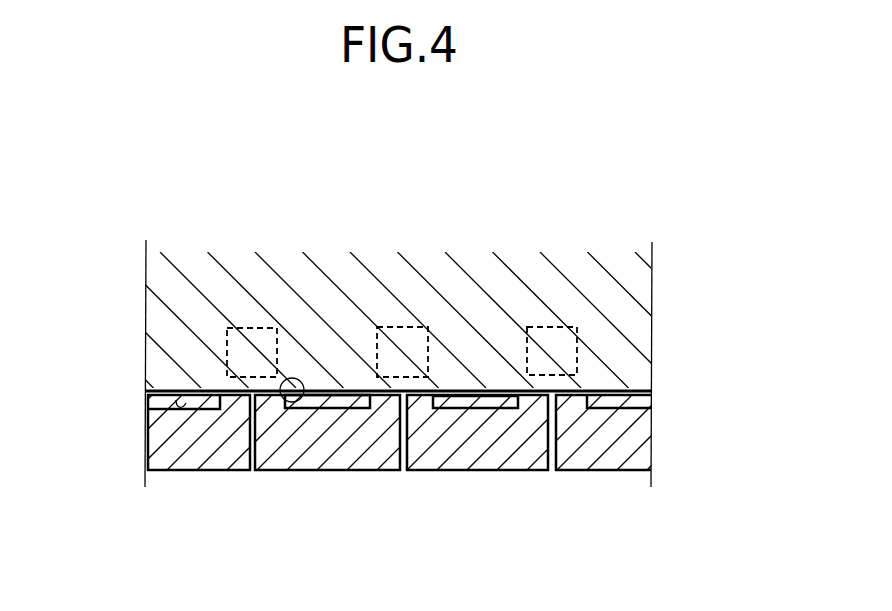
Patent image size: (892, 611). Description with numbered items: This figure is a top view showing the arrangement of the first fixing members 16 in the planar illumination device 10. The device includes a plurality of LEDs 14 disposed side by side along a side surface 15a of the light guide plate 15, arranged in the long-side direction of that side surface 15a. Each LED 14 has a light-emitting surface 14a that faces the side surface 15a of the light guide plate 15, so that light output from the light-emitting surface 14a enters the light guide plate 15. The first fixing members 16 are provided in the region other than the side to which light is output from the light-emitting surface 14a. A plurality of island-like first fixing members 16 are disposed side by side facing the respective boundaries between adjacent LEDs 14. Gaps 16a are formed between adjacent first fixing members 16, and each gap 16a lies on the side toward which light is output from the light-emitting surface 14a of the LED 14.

The planar illumination device 10 is at (586, 142).
The LED 14 is at (428, 447).
The light-emitting surface 14a is at (283, 401).
The light guide plate 15 is at (163, 318).
The side surface 15a is at (186, 403).
The first fixing member 16 is at (252, 328).
The gap 16a is at (325, 340).